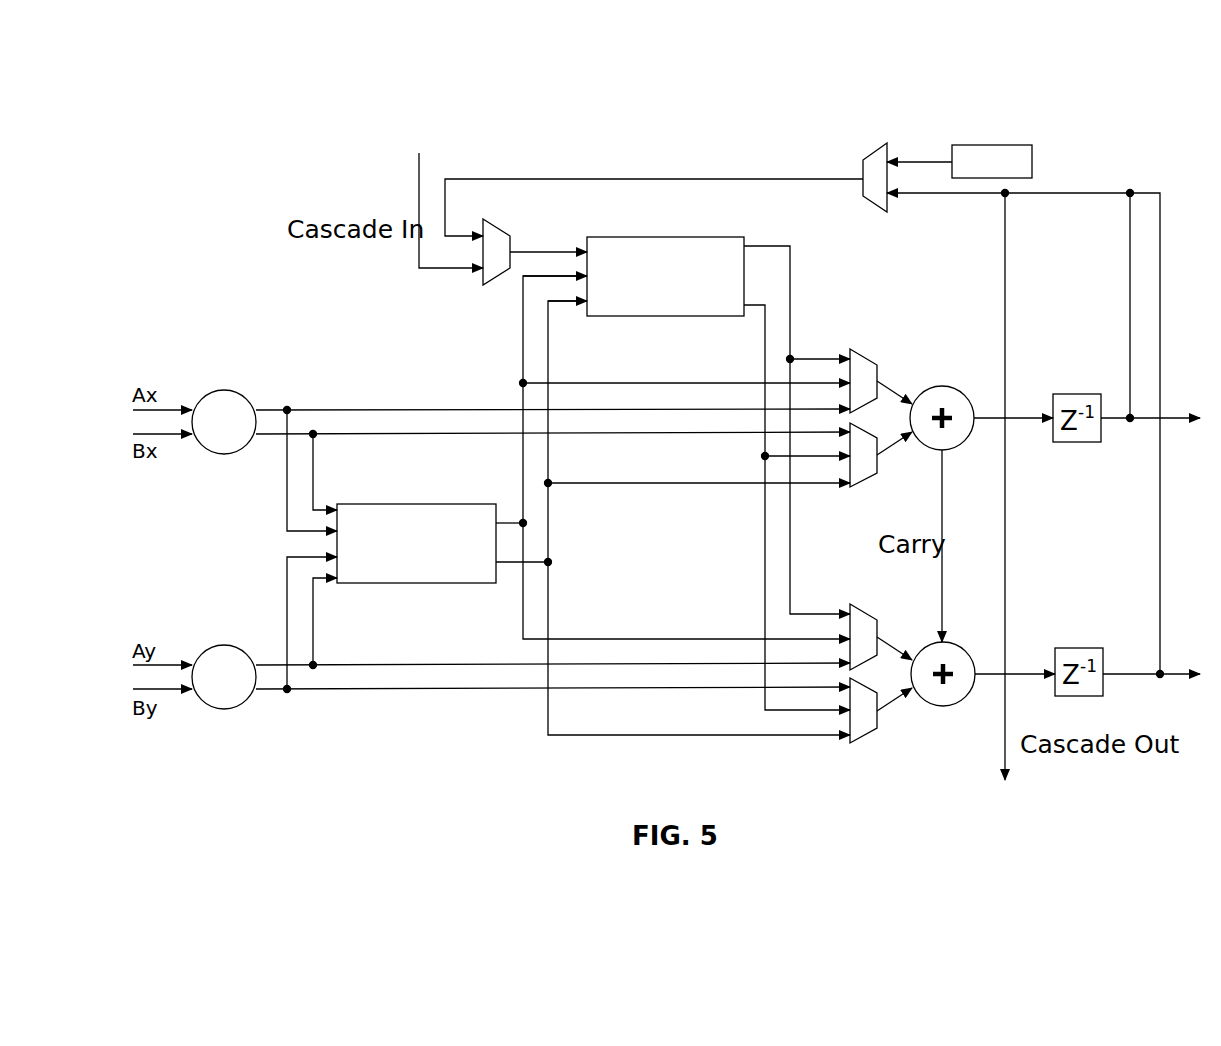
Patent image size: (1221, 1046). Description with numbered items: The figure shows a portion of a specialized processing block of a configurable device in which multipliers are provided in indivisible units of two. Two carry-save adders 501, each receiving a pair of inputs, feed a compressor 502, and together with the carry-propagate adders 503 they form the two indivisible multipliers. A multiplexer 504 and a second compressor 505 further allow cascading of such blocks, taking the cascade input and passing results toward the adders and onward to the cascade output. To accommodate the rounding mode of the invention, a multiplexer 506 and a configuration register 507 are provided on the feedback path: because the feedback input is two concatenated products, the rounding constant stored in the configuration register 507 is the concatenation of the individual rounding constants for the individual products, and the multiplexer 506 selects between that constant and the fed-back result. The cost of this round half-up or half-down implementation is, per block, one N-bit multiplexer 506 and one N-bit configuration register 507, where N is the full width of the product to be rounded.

The carry-save adder 501 is at (224, 390).
The compressor 502 is at (390, 504).
The carry-propagate adder 503 is at (948, 387).
The multiplexer 504 is at (496, 226).
The compressor 505 is at (640, 237).
The multiplexer 506 is at (868, 153).
The configuration register 507 is at (994, 145).